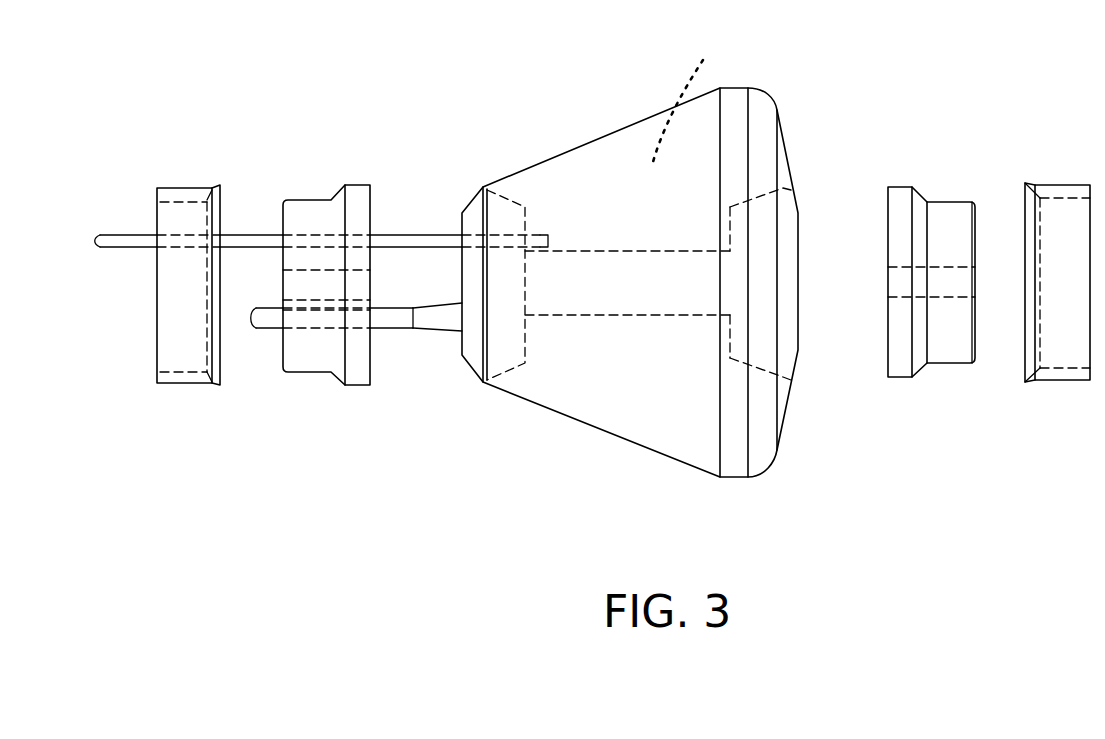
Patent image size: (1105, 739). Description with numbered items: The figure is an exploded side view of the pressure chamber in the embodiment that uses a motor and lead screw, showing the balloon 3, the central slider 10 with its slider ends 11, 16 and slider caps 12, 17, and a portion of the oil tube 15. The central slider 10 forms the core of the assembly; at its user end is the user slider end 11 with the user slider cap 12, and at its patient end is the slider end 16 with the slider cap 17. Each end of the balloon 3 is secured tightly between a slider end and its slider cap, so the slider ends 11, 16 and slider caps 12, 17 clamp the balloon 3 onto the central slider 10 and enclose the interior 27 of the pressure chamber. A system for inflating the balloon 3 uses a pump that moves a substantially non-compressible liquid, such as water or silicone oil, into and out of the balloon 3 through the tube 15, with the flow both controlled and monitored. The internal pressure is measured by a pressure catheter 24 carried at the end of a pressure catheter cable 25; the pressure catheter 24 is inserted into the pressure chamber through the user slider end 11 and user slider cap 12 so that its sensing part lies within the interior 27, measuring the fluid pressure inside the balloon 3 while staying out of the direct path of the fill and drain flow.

The balloon 3 is at (620, 130).
The central slider 10 is at (623, 315).
The slider end 11 is at (472, 218).
The slider cap 12 is at (308, 200).
The tube 15 is at (410, 330).
The slider end 16 is at (790, 230).
The slider cap 17 is at (931, 201).
The pressure catheter 24 is at (542, 233).
The pressure catheter cable 25 is at (252, 242).
The interior 27 is at (698, 88).